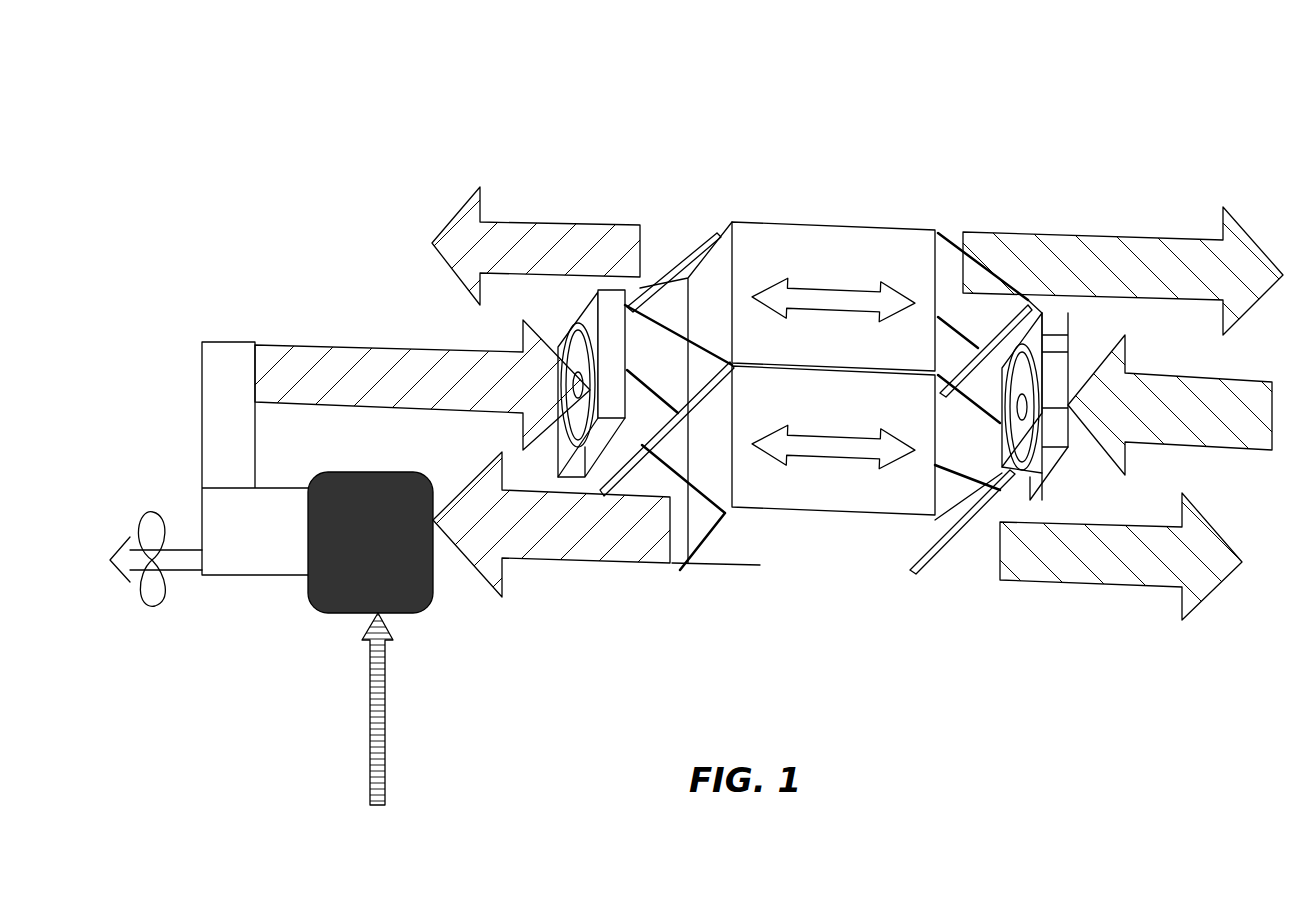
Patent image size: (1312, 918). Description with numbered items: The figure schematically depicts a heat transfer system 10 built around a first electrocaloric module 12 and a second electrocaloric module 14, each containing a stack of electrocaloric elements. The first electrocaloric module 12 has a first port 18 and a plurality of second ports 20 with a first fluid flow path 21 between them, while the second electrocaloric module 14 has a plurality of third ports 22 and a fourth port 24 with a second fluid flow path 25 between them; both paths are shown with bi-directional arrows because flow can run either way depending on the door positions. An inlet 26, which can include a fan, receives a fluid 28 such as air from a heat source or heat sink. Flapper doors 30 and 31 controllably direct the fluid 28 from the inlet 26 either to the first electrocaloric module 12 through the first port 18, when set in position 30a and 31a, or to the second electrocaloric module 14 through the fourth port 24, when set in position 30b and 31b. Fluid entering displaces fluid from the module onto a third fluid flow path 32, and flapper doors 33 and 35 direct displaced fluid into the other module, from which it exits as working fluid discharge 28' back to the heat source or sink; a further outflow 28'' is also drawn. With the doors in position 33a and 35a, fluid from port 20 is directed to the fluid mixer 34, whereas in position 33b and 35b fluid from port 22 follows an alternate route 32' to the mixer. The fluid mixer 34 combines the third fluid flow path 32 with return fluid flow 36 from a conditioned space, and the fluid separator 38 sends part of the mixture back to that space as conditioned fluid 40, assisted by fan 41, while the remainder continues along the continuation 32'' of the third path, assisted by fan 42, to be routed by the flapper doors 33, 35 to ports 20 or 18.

The heat transfer system 10 is at (200, 140).
The first electrocaloric module 12 is at (828, 493).
The second electrocaloric module 14 is at (806, 243).
The first port 18 is at (955, 500).
The second ports 20 is at (700, 510).
The first fluid flow path 21 is at (843, 450).
The third ports 22 is at (722, 282).
The fourth port 24 is at (950, 330).
The second fluid flow path 25 is at (850, 303).
The inlet 26 is at (1060, 460).
The fluid 28 is at (1175, 414).
The working fluid discharge 28' is at (1123, 247).
The outdoor air return flow 28'' is at (1121, 580).
The flapper door 30 is at (1038, 300).
The flapper door position 30a is at (986, 351).
The flapper door position 30b is at (983, 293).
The flapper door 31 is at (953, 535).
The flapper door position 31a is at (962, 522).
The flapper door position 31b is at (1045, 478).
The third fluid flow path 32 is at (551, 551).
The alternate route for the third fluid flow path 32' is at (536, 225).
The continuation of the third fluid flow path 32'' is at (422, 375).
The flapper door 33 is at (677, 423).
The flapper door position 33a is at (667, 429).
The flapper door position 33b is at (658, 478).
The fluid mixer 34 is at (308, 603).
The flapper door 35 is at (683, 256).
The flapper door position 35a is at (674, 272).
The flapper door position 35b is at (596, 305).
The return fluid flow 36 is at (376, 712).
The fluid separator 38 is at (250, 577).
The conditioned fluid 40 is at (187, 575).
The fan 41 is at (147, 597).
The fan 42 is at (557, 447).